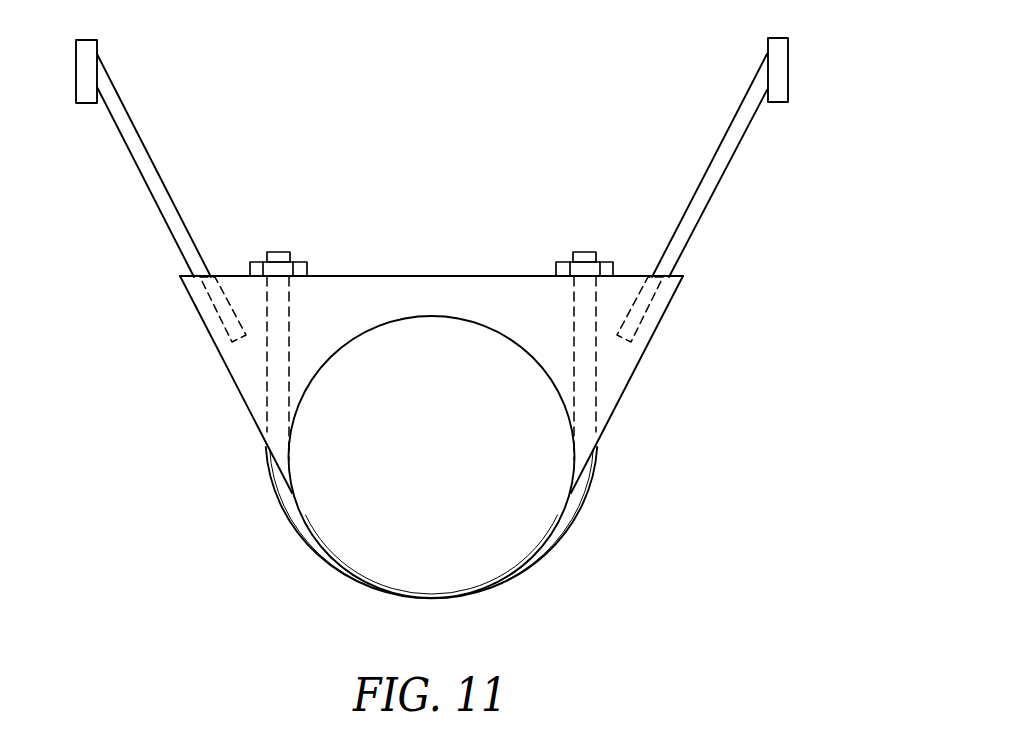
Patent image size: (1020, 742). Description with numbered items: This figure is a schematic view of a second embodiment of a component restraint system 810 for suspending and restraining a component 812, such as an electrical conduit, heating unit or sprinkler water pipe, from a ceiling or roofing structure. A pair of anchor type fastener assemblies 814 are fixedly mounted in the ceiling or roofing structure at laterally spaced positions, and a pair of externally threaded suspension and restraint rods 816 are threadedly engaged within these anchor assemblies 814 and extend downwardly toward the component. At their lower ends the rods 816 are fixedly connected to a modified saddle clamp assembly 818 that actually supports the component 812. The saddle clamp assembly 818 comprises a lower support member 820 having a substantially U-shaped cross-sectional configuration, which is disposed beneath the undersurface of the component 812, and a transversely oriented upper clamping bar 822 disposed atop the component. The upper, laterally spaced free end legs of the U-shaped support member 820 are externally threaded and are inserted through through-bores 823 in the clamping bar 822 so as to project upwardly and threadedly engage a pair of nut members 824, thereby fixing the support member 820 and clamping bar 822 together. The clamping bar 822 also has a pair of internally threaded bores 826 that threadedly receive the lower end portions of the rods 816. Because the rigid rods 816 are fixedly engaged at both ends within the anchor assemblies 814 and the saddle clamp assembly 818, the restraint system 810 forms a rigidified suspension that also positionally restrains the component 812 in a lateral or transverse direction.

The component restraint system 810 is at (485, 124).
The component 812 is at (450, 467).
The anchor type fastener assembly 814 is at (88, 50).
The externally threaded suspension and restraint rod 816 is at (145, 149).
The modified saddle clamp assembly 818 is at (427, 275).
The lower support member 820 is at (535, 565).
The upper clamping bar 822 is at (497, 298).
The through-bore 823 is at (287, 327).
The nut member 824 is at (262, 260).
The internally threaded bore 826 is at (220, 303).